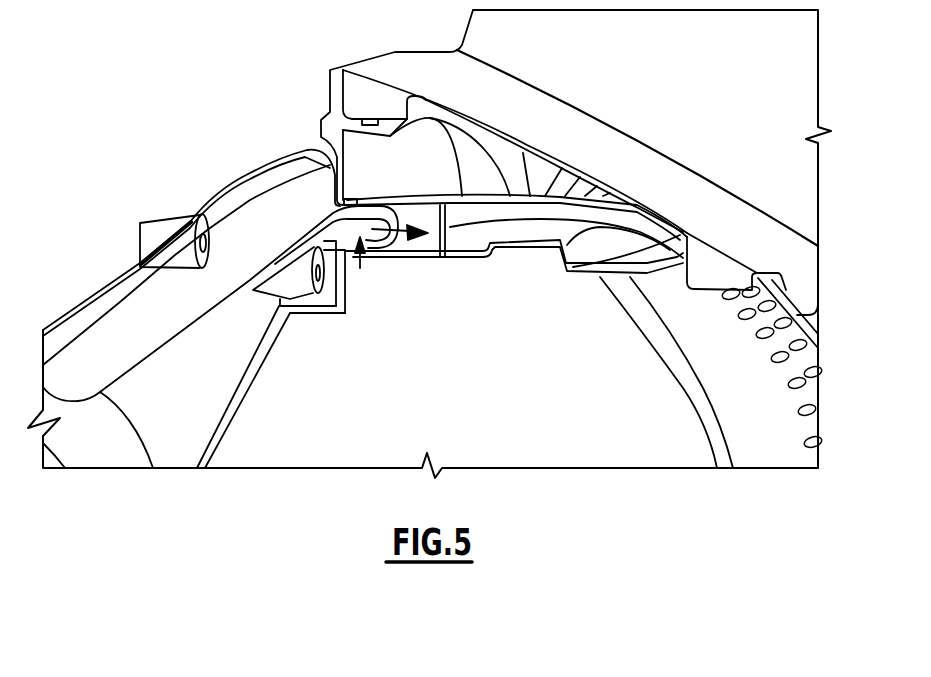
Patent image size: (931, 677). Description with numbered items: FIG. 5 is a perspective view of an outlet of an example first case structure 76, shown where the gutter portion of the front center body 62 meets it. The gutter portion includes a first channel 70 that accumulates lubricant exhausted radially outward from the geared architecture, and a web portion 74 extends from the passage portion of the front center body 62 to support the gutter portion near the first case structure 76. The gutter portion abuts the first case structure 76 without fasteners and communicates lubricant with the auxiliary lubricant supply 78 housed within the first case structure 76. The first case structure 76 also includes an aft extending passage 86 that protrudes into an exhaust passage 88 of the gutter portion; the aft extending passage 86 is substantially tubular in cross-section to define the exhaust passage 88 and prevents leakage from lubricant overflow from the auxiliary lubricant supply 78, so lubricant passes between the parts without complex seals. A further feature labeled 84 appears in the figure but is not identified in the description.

The front center body 62 is at (778, 70).
The first channel 70 is at (535, 250).
The web portion 74 is at (583, 194).
The first case structure 76 is at (233, 193).
The auxiliary lubricant supply 78 is at (213, 338).
The leakage flow path 84 is at (360, 268).
The aft extending passage 86 is at (320, 137).
The exhaust passage 88 is at (415, 247).